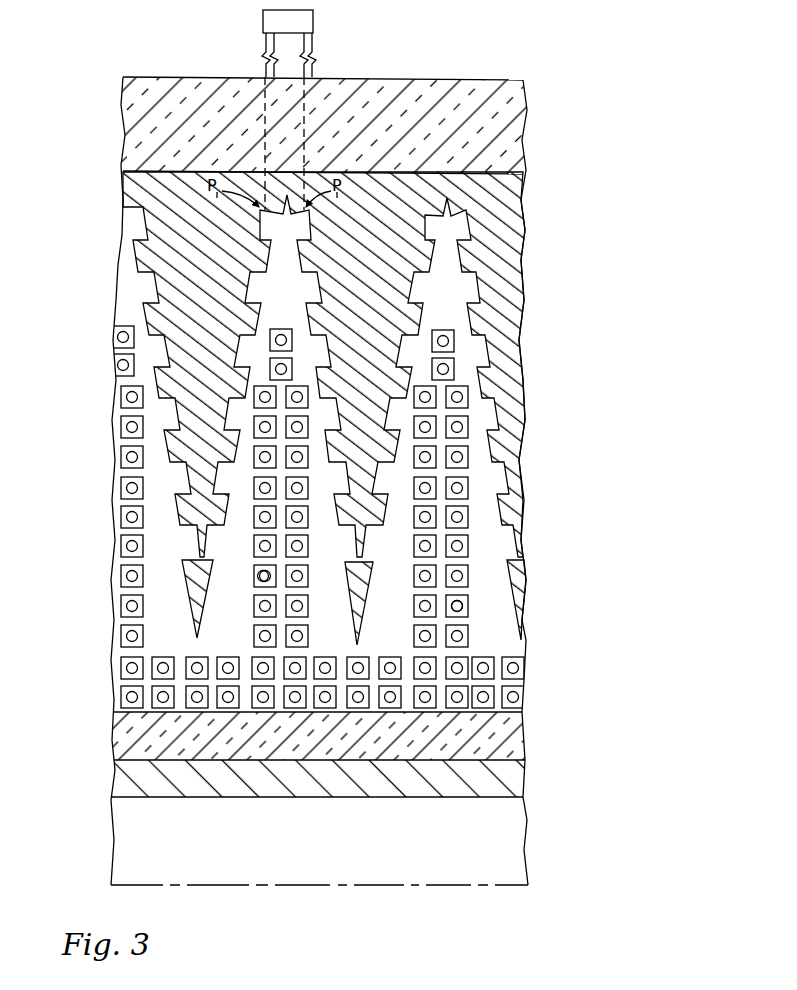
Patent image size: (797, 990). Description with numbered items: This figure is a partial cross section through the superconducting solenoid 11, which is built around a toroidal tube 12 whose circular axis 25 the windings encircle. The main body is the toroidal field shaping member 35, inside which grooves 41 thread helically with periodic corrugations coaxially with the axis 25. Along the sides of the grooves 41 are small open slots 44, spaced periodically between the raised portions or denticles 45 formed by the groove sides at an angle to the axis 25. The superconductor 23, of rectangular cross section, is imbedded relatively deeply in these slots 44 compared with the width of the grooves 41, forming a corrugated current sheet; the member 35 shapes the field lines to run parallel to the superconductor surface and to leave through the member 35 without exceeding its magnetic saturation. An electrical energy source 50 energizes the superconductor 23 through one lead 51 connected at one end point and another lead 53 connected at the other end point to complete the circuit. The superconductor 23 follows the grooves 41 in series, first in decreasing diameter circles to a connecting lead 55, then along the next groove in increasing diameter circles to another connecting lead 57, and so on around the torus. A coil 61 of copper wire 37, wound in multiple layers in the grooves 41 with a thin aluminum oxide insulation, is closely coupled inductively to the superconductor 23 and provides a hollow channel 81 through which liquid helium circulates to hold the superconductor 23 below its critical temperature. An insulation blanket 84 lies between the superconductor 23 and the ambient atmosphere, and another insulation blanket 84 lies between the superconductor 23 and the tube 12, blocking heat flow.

The solenoid 11 is at (529, 282).
The tube 12 is at (518, 781).
The superconductor 23 is at (413, 277).
The axis 25 is at (385, 876).
The field shaping member 35 is at (495, 203).
The copper wire 37 is at (494, 678).
The grooves 41 is at (483, 571).
The slots 44 is at (486, 422).
The denticles 45 is at (433, 338).
The electrical energy source 50 is at (262, 23).
The lead 51 is at (305, 116).
The lead 53 is at (264, 116).
The connecting lead 55 is at (366, 583).
The connecting lead 57 is at (447, 218).
The coil 61 is at (462, 371).
The hollow channel 81 is at (259, 582).
The insulation blanket 84 is at (503, 152).